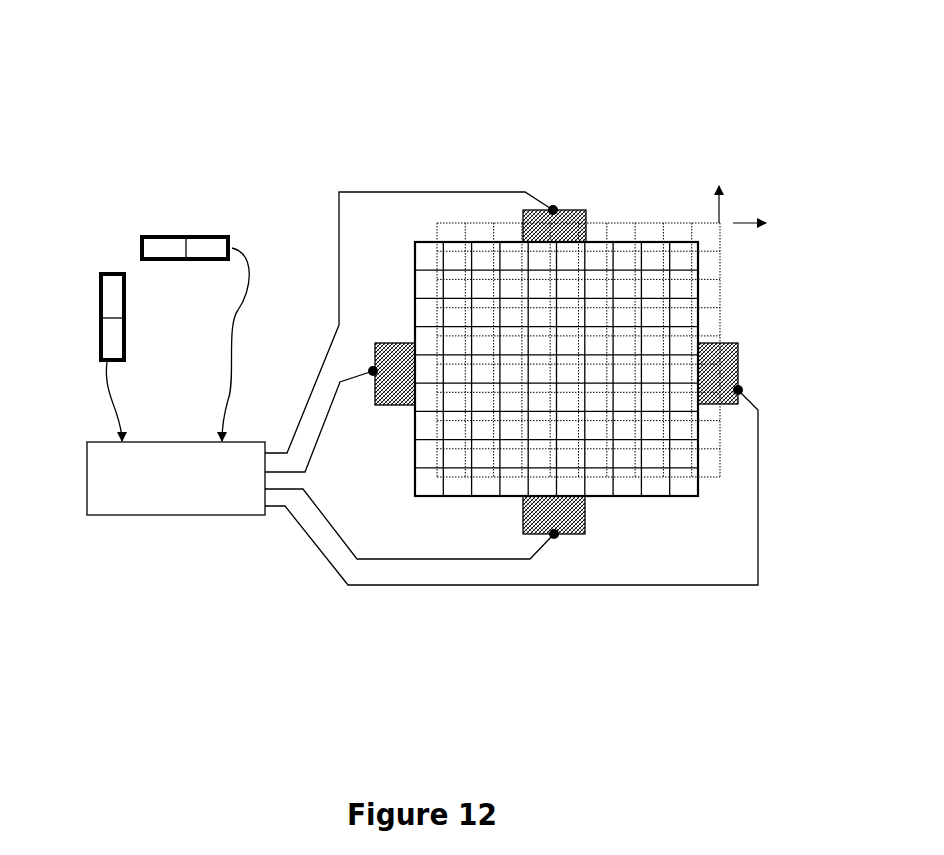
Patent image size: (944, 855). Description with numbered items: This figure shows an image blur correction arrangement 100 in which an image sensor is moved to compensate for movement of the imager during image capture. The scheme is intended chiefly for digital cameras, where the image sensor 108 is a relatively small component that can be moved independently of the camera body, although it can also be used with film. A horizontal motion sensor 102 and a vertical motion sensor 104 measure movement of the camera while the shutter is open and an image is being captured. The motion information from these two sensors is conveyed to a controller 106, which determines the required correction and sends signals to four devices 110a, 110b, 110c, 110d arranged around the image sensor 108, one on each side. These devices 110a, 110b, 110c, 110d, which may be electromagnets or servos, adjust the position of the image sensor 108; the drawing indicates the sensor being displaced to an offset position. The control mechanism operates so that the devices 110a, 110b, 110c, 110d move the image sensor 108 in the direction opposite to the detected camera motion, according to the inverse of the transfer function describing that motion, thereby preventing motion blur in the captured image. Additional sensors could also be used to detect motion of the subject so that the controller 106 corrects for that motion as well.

The image stabilization system 100 is at (166, 44).
The horizontal motion sensor 102 is at (170, 235).
The vertical motion sensor 104 is at (99, 327).
The controller 106 is at (197, 515).
The image sensor 108 is at (630, 240).
The device 110a is at (740, 365).
The device 110b is at (566, 534).
The device 110c is at (560, 210).
The device 110d is at (405, 343).